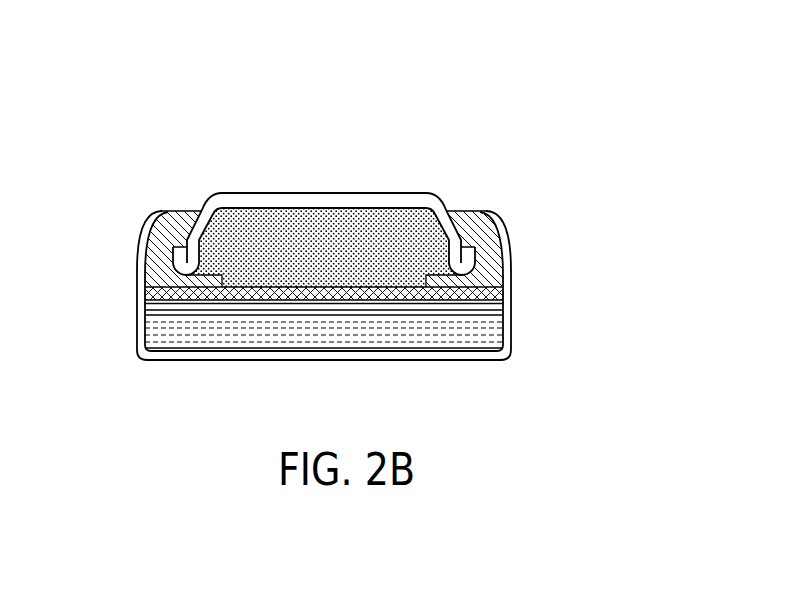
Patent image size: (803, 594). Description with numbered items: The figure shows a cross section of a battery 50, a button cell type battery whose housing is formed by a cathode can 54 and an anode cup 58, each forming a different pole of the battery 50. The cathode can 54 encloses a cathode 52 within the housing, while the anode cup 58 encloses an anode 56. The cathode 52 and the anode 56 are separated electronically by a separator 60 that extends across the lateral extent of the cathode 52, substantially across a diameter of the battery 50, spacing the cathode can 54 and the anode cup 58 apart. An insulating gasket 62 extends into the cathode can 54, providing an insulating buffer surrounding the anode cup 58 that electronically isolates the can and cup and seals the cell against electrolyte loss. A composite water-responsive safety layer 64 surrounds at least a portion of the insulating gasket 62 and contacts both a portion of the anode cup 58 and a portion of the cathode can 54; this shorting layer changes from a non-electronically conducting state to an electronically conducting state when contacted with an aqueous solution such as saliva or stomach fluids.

The battery 50 is at (161, 83).
The cathode 52 is at (200, 340).
The cathode can 54 is at (440, 358).
The anode 56 is at (315, 217).
The anode cup 58 is at (222, 192).
The separator 60 is at (305, 300).
The insulating gasket 62 is at (189, 235).
The composite water-responsive safety layer 64 is at (493, 218).